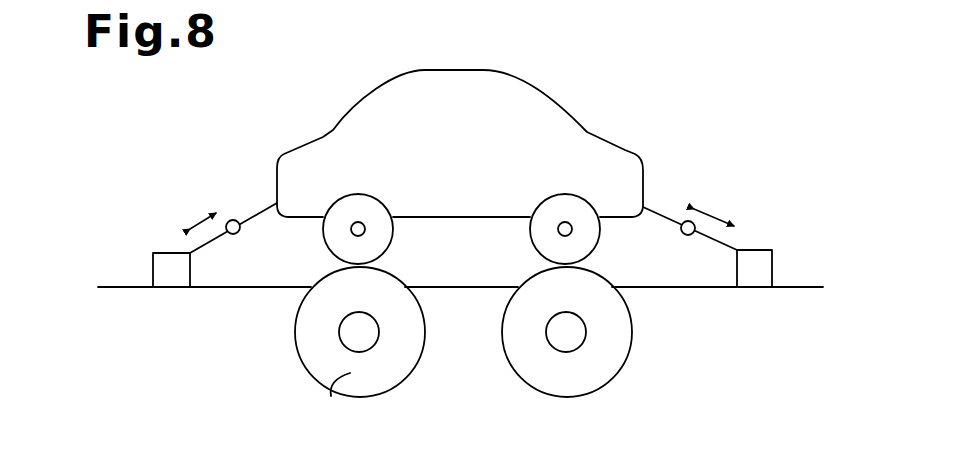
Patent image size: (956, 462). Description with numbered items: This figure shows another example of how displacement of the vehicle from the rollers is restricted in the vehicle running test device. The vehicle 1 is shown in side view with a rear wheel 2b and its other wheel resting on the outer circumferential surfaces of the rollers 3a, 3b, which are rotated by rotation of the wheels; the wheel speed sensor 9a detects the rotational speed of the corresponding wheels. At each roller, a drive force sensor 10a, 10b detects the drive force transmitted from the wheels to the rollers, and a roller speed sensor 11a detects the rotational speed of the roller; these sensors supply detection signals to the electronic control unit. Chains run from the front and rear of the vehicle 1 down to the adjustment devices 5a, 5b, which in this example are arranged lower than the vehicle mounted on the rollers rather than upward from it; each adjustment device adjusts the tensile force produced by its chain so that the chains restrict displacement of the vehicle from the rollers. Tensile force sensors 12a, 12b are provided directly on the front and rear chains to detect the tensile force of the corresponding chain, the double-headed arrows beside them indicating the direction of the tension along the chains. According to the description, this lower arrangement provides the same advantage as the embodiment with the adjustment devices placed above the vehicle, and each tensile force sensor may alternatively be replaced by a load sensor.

The vehicle 1 is at (483, 70).
The rear wheel 2b is at (392, 246).
The roller 3a is at (421, 318).
The roller 3b is at (629, 318).
The adjustment device 5a is at (153, 274).
The adjustment device 5b is at (772, 275).
The wheel speed sensor 9a is at (357, 221).
The drive force sensor 10a is at (393, 326).
The drive force sensor 10b is at (600, 326).
The roller speed sensor 11a is at (331, 396).
The tensile force sensor 12a is at (237, 219).
The tensile force sensor 12b is at (683, 220).